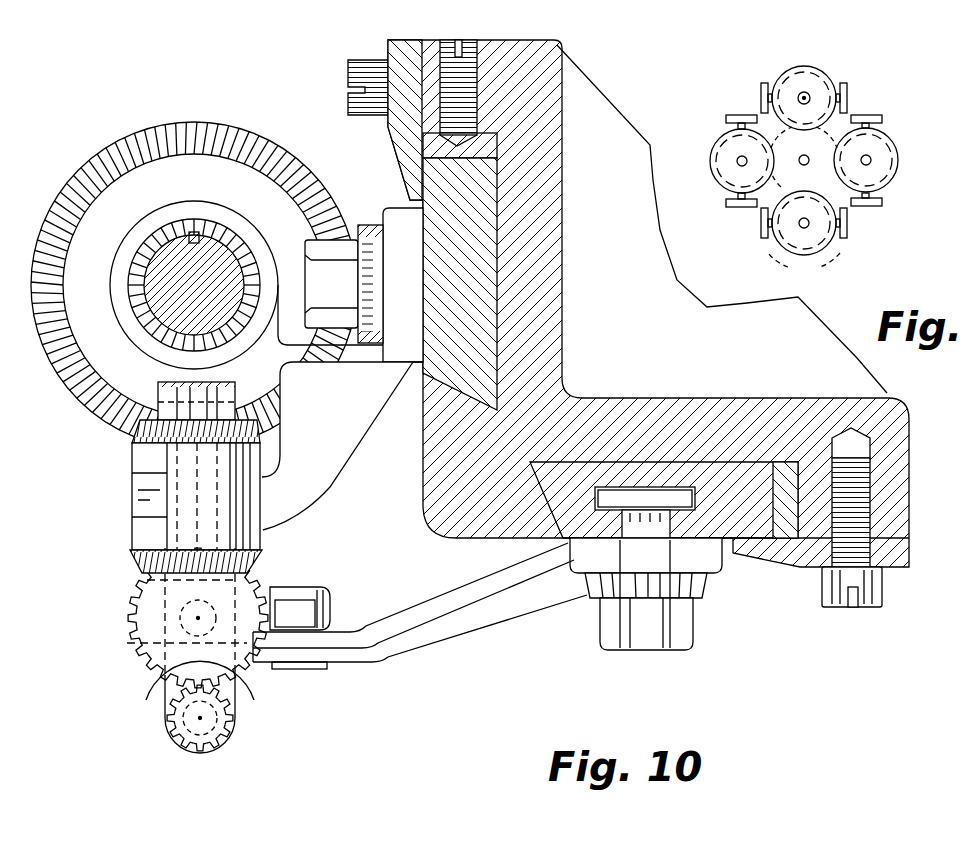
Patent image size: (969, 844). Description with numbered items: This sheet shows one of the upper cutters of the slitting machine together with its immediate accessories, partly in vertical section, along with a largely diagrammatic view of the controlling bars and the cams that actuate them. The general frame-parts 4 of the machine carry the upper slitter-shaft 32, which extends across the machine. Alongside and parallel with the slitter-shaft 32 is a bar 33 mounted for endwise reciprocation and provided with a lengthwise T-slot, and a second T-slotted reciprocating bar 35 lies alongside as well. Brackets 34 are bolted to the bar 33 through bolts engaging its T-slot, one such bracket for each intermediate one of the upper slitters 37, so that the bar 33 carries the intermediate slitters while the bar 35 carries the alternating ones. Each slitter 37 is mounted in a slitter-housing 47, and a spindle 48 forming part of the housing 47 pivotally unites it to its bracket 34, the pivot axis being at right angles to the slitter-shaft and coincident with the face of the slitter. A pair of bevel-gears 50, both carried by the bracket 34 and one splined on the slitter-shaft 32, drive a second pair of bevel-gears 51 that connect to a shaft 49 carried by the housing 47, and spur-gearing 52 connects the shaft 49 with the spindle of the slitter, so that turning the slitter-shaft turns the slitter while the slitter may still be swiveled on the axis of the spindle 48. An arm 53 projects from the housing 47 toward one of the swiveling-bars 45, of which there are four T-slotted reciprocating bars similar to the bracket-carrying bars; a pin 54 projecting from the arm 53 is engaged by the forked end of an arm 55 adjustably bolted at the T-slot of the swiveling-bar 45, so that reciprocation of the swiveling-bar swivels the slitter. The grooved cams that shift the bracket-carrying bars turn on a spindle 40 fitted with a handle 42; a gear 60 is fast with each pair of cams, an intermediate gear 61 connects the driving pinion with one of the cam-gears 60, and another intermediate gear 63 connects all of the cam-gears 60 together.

In FIG. 10, the general frame-parts 4 is at (590, 80).
In FIG. 10, the upper slitter-shaft 32 is at (153, 280).
In FIG. 10, the bar 33 is at (490, 207).
In FIG. 11, the bar 33 is at (848, 98).
In FIG. 10, the brackets 34 is at (358, 435).
In FIG. 11, the second T-slotted reciprocating bar 35 is at (760, 90).
In FIG. 10, the upper slitters 37 is at (155, 718).
In FIG. 11, the spindle 40 is at (805, 96).
In FIG. 10, the handle 42 is at (209, 234).
In FIG. 10, the swiveling-bars 45 is at (577, 477).
In FIG. 11, the swiveling-bars 45 is at (885, 118).
In FIG. 10, the slitter-housing 47 is at (127, 643).
In FIG. 10, the spindle 48 is at (187, 382).
In FIG. 10, the shaft 49 is at (123, 601).
In FIG. 10, the pair of bevel-gears 50 is at (83, 410).
In FIG. 10, the pair of bevel-gears 51 is at (263, 562).
In FIG. 10, the spur-gearing 52 is at (250, 587).
In FIG. 10, the arm 53 is at (332, 592).
In FIG. 10, the pins 54 is at (298, 668).
In FIG. 10, the arms 55 is at (443, 607).
In FIG. 11, the gear 60 is at (840, 80).
In FIG. 11, the intermediate gear 61 is at (843, 260).
In FIG. 11, the intermediate gear 63 is at (808, 166).